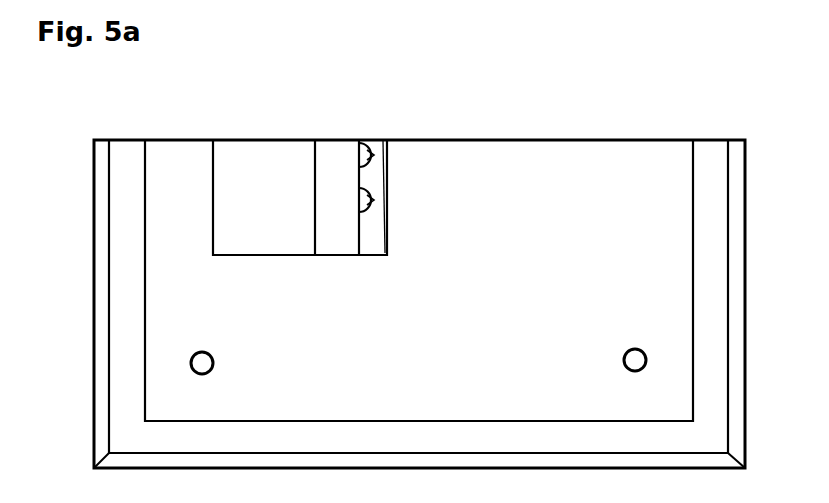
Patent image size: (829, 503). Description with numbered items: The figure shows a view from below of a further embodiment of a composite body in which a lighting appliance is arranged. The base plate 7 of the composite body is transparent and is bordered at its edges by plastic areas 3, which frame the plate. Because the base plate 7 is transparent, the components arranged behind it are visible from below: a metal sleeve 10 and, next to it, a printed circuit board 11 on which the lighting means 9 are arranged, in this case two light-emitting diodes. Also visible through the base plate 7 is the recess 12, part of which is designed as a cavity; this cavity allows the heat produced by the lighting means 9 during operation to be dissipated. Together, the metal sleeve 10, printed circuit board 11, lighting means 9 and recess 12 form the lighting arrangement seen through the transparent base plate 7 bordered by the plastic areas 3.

The plastic areas 3 is at (117, 205).
The base plate 7 is at (575, 173).
The lighting means 9 is at (383, 142).
The metal sleeve 10 is at (240, 177).
The printed circuit board 11 is at (340, 168).
The recess 12 is at (372, 242).